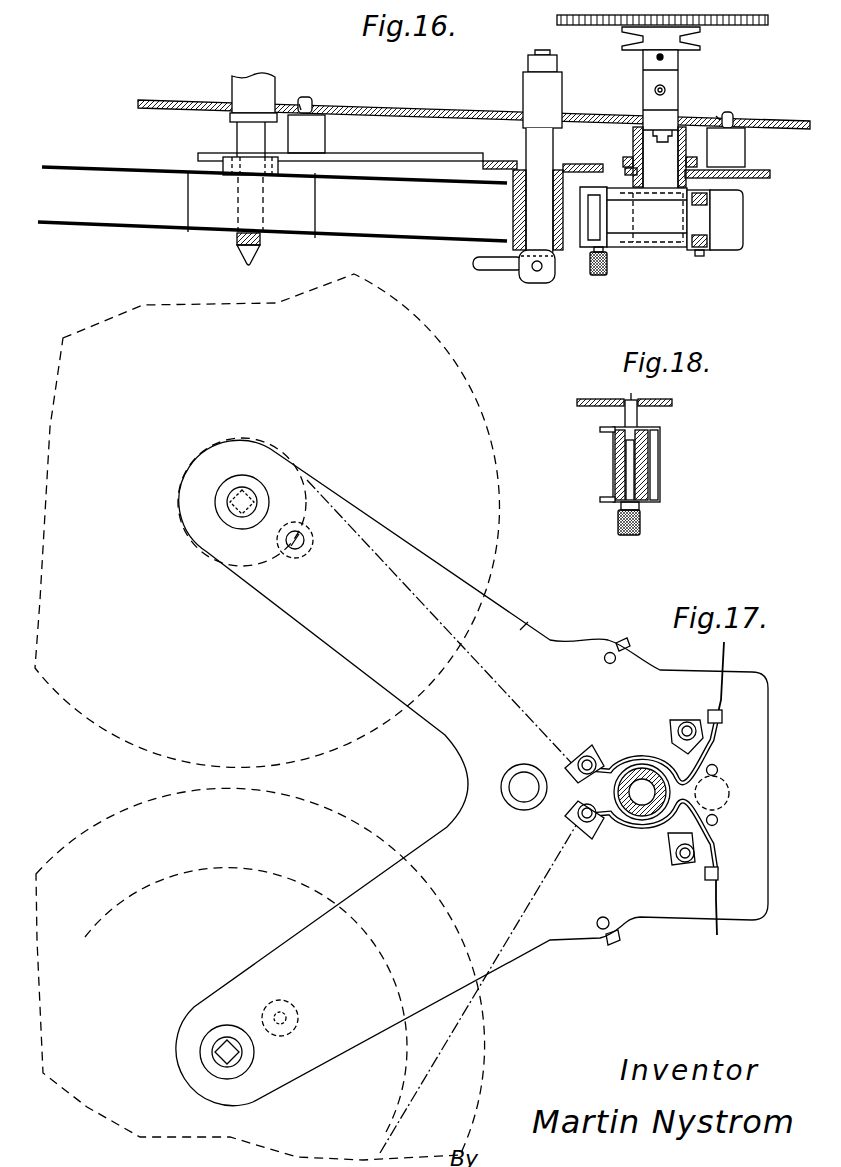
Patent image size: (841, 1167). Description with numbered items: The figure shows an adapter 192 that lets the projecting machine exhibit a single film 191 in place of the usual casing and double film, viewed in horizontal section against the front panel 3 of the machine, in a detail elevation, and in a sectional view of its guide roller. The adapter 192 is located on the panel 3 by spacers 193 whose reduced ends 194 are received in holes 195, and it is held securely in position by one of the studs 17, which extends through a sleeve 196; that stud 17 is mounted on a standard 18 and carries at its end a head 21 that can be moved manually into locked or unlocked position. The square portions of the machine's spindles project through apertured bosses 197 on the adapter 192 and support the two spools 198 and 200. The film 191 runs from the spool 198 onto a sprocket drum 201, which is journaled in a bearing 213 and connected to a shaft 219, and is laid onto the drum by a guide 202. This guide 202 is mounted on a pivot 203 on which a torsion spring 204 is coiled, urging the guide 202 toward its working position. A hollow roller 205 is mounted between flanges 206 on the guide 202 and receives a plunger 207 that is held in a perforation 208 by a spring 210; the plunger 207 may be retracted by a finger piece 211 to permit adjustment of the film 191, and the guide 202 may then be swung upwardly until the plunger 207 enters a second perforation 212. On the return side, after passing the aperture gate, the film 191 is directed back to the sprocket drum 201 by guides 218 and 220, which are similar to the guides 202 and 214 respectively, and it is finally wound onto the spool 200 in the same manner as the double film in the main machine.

In FIG. 16, the front panel 3 is at (172, 102).
In FIG. 16, the stud 17 is at (542, 153).
In FIG. 16, the standard 18 is at (233, 92).
In FIG. 16, the head 21 is at (508, 268).
In FIG. 17, the single film 191 is at (521, 690).
In FIG. 16, the adapter 192 is at (423, 160).
In FIG. 17, the adapter 192 is at (520, 630).
In FIG. 18, the adapter 192 is at (583, 399).
In FIG. 16, the spacer 193 is at (314, 134).
In FIG. 17, the spacer 193 is at (302, 550).
In FIG. 16, the reduced end 194 is at (312, 104).
In FIG. 16, the hole 195 is at (299, 104).
In FIG. 16, the sleeve 196 is at (514, 210).
In FIG. 17, the sleeve 196 is at (516, 807).
In FIG. 16, the apertured boss 197 is at (222, 165).
In FIG. 17, the apertured boss 197 is at (248, 492).
In FIG. 17, the spool 198 is at (448, 358).
In FIG. 17, the spool 200 is at (478, 1050).
In FIG. 16, the sprocket drum 201 is at (647, 220).
In FIG. 17, the sprocket drum 201 is at (628, 766).
In FIG. 17, the guide 202 is at (593, 750).
In FIG. 16, the pivot 203 is at (713, 221).
In FIG. 17, the pivot 203 is at (686, 724).
In FIG. 16, the torsion spring 204 is at (702, 246).
In FIG. 18, the hollow roller 205 is at (648, 462).
In FIG. 16, the flange 206 is at (582, 192).
In FIG. 18, the flange 206 is at (602, 497).
In FIG. 18, the plunger 207 is at (632, 418).
In FIG. 18, the perforation 208 is at (642, 390).
In FIG. 18, the spring 210 is at (637, 483).
In FIG. 18, the finger piece 211 is at (620, 532).
In FIG. 17, the perforation 212 is at (612, 651).
In FIG. 16, the bearing 213 is at (633, 144).
In FIG. 17, the guide 214 is at (724, 718).
In FIG. 17, the guide 218 is at (672, 848).
In FIG. 16, the shaft 219 is at (660, 120).
In FIG. 17, the guide 220 is at (705, 876).